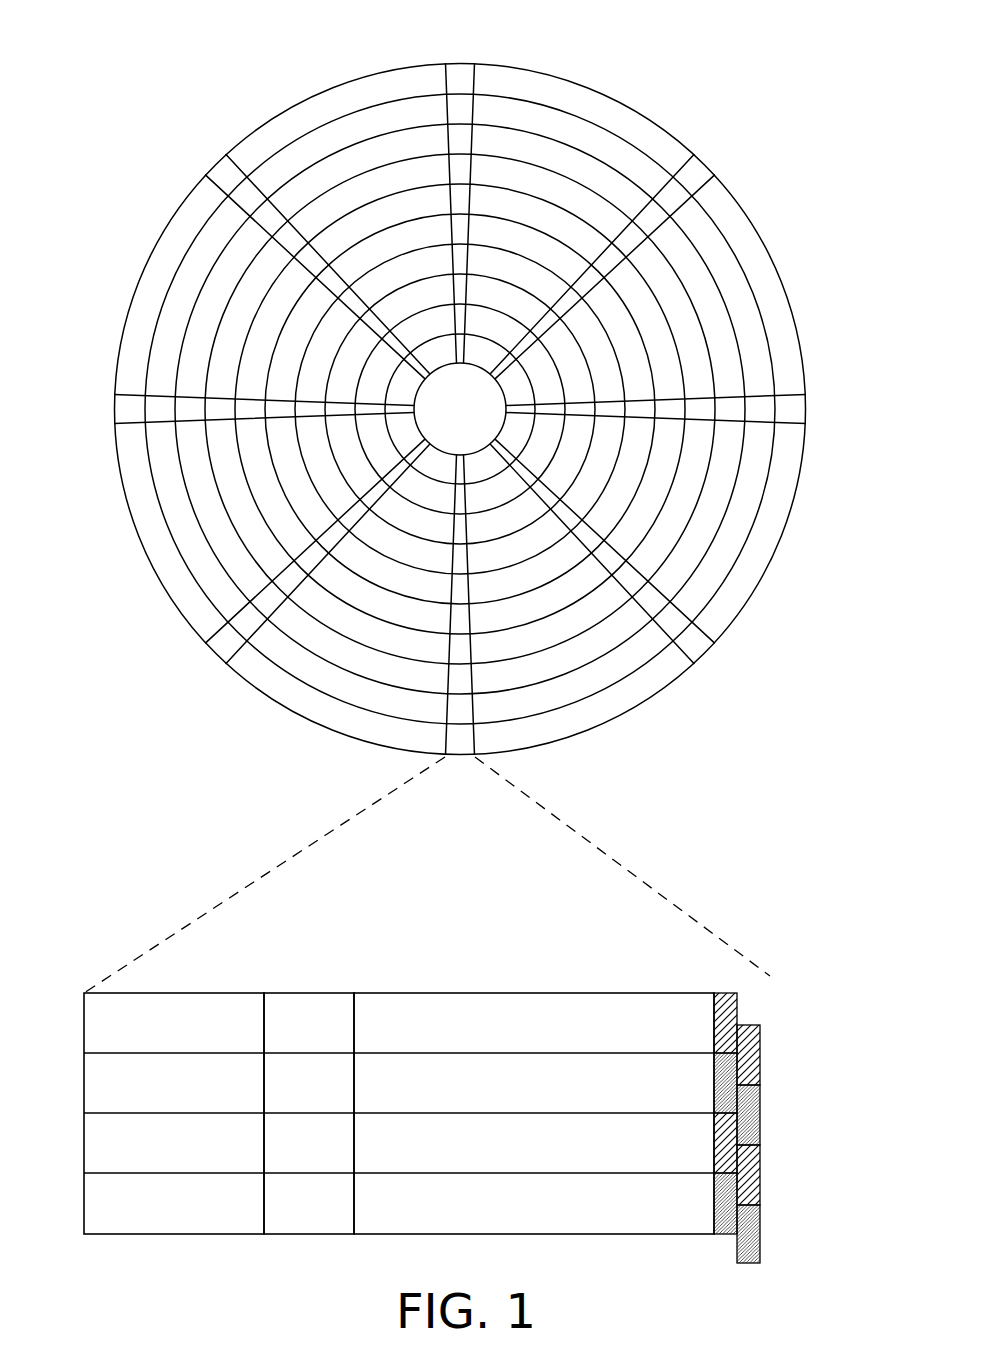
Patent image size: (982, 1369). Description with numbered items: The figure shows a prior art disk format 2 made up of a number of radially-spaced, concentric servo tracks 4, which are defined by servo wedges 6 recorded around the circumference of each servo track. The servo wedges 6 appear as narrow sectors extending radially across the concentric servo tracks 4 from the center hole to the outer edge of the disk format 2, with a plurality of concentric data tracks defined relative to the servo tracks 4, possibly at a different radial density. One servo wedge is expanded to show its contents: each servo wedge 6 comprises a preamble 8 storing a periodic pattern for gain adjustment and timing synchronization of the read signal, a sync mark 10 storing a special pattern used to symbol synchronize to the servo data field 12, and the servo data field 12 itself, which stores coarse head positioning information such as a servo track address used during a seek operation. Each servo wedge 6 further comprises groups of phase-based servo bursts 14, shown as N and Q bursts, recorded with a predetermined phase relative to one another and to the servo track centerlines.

The disk format 2 is at (207, 71).
The servo tracks 4 is at (578, 135).
The servo wedges 6 is at (460, 76).
The preamble 8 is at (183, 993).
The sync mark 10 is at (311, 993).
The servo data field 12 is at (522, 993).
The phase-based servo bursts 14 is at (752, 995).